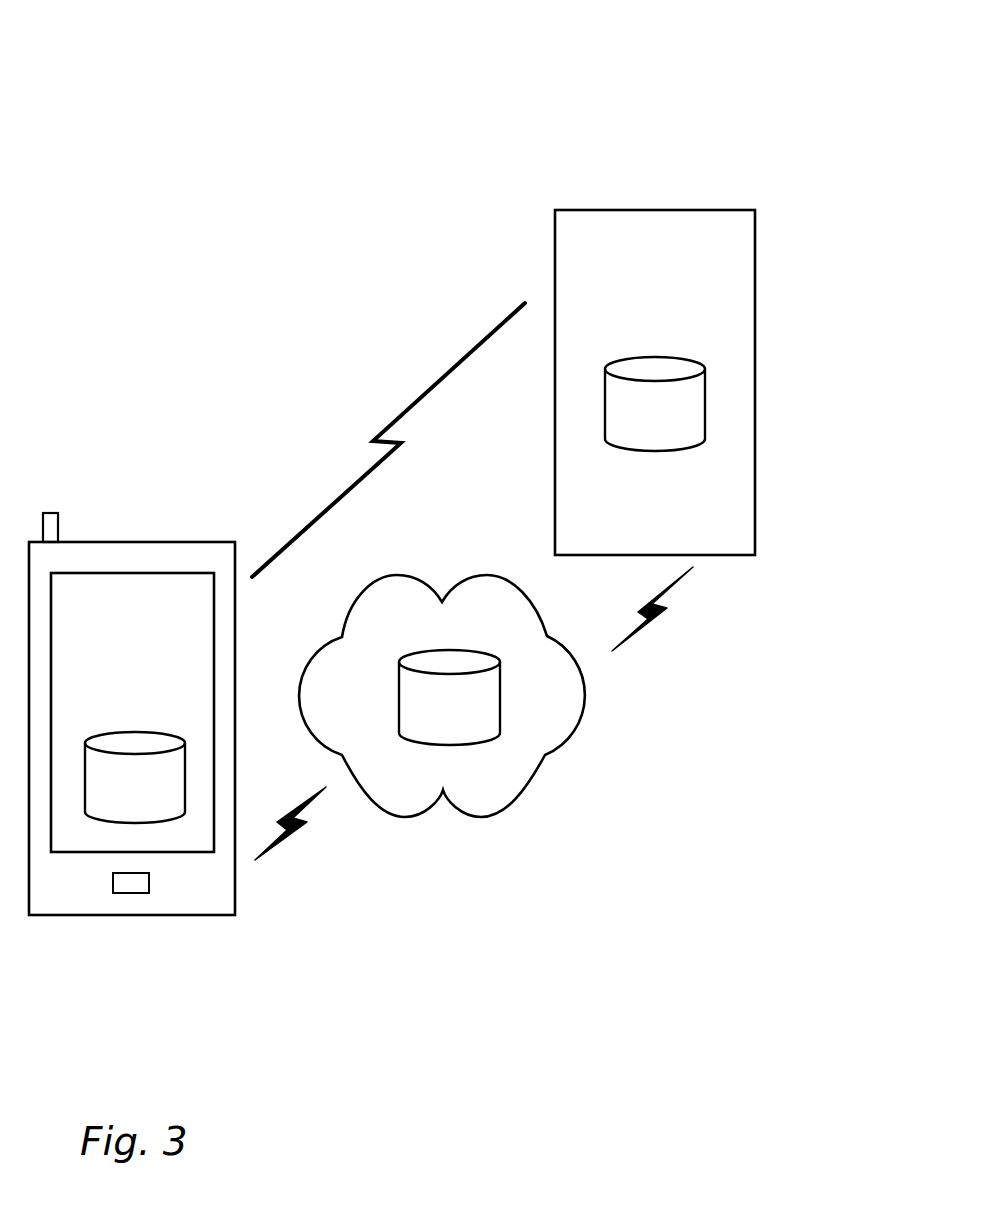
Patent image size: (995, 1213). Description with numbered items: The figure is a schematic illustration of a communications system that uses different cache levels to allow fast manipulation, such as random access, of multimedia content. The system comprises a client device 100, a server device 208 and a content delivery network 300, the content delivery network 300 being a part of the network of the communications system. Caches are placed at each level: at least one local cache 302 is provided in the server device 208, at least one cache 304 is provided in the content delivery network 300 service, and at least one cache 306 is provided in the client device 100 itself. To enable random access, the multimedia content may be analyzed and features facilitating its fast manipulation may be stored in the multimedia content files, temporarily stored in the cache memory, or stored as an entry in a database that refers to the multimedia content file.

The client device 100 is at (128, 542).
The server device 208 is at (653, 210).
The content delivery network 300 is at (463, 633).
The local cache 302 is at (705, 407).
The cache 304 is at (500, 698).
The cache 306 is at (133, 823).